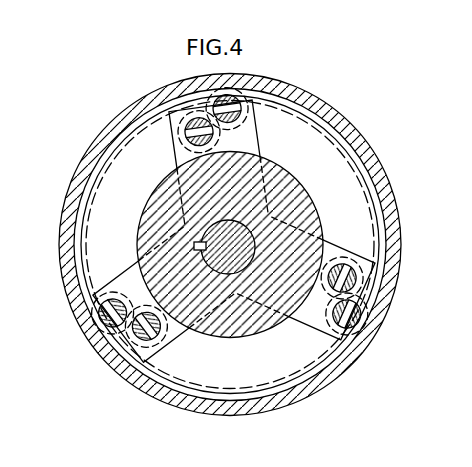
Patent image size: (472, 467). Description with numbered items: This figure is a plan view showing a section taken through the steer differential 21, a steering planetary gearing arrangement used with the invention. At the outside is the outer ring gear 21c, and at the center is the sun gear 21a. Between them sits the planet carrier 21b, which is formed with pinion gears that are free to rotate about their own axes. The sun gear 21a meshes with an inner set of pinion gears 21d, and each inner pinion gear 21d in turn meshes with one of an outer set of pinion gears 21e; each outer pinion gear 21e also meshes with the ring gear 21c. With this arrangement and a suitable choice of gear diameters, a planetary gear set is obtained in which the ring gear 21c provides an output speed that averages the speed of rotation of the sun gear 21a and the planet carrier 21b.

The steer differential 21 is at (330, 97).
The sun gear 21a is at (157, 207).
The planet carrier 21b is at (312, 335).
The outer ring gear 21c is at (118, 115).
The inner set of pinion gears 21d is at (135, 334).
The outer set of pinion gears 21e is at (100, 318).